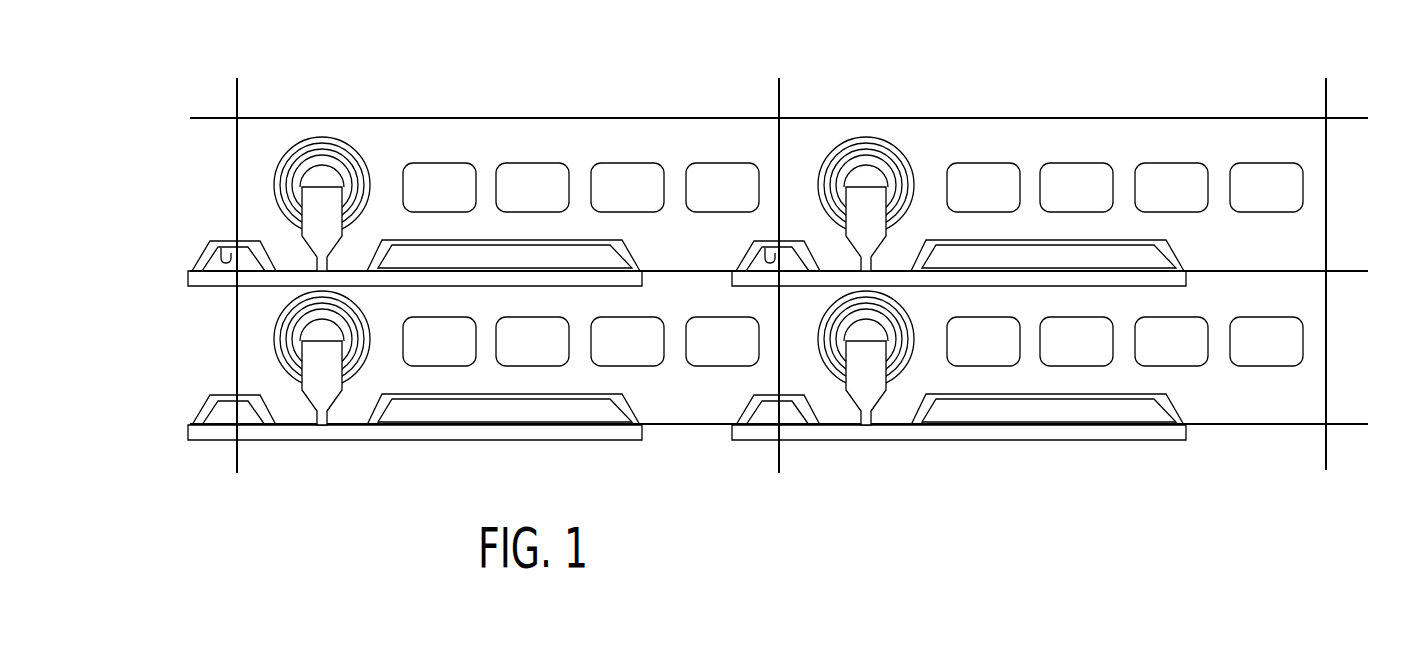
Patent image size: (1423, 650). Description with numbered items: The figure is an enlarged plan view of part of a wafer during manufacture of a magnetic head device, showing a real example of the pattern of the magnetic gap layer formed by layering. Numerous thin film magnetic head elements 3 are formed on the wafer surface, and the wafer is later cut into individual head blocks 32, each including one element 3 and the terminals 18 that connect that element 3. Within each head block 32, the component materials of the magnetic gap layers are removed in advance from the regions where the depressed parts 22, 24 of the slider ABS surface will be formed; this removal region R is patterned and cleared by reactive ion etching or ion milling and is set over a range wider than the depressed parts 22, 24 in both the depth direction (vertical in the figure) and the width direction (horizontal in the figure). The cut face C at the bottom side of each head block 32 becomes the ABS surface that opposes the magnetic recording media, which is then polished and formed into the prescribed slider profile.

The thin film magnetic head element 3 is at (315, 130).
The head block 32 is at (372, 297).
The depressed part 22 is at (462, 247).
The terminal 18 is at (615, 172).
The depressed part 24 is at (210, 253).
The removal region R is at (630, 258).
The cut face C is at (1333, 275).